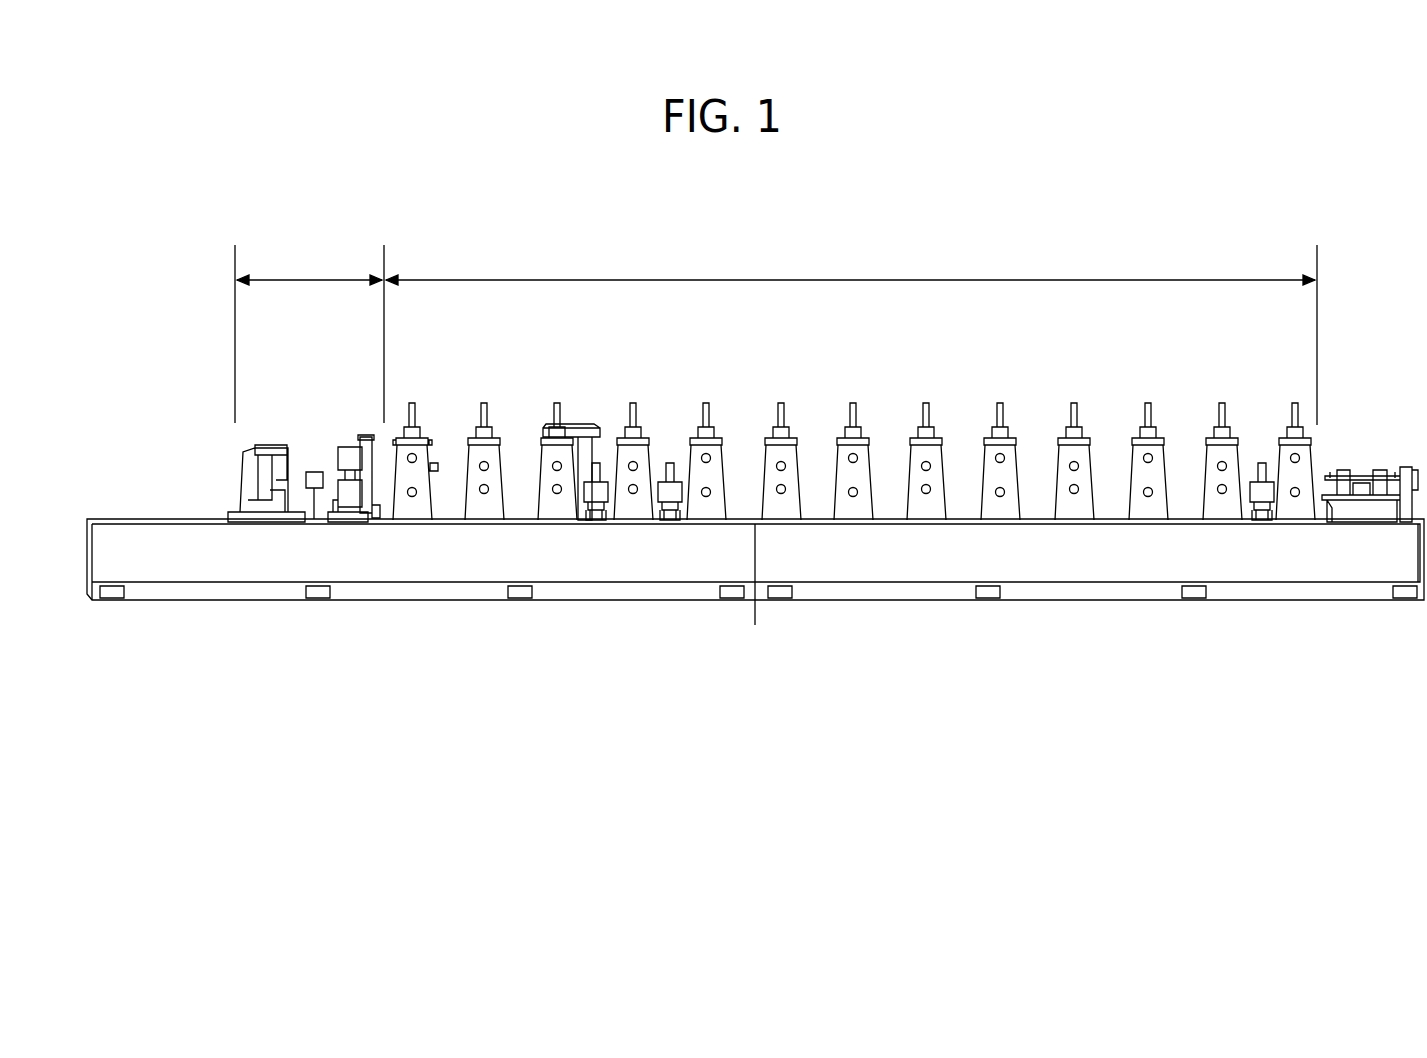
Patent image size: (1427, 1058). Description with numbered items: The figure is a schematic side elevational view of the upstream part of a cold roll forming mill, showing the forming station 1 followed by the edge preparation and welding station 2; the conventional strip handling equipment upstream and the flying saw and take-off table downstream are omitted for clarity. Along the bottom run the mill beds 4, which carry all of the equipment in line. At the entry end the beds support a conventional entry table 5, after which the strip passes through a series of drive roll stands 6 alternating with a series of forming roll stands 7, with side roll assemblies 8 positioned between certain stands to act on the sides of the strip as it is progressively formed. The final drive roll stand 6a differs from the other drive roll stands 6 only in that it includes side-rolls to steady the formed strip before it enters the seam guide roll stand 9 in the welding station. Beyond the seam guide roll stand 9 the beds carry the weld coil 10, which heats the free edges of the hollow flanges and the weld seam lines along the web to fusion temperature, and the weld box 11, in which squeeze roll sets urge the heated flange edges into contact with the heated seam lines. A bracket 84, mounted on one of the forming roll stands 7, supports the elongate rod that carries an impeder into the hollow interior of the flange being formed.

The forming station 1 is at (1047, 243).
The edge preparation and welding station 2 is at (314, 224).
The mill beds 4 is at (175, 552).
The entry table 5 is at (1384, 522).
The drive roll stands 6 is at (1026, 564).
The drive roll stand 6a is at (412, 505).
The forming roll stands 7 is at (861, 564).
The side roll assemblies 8 is at (936, 594).
The seam guide roll stand 9 is at (372, 508).
The weld coil 10 is at (314, 497).
The weld box 11 is at (265, 506).
The bracket 84 is at (592, 443).